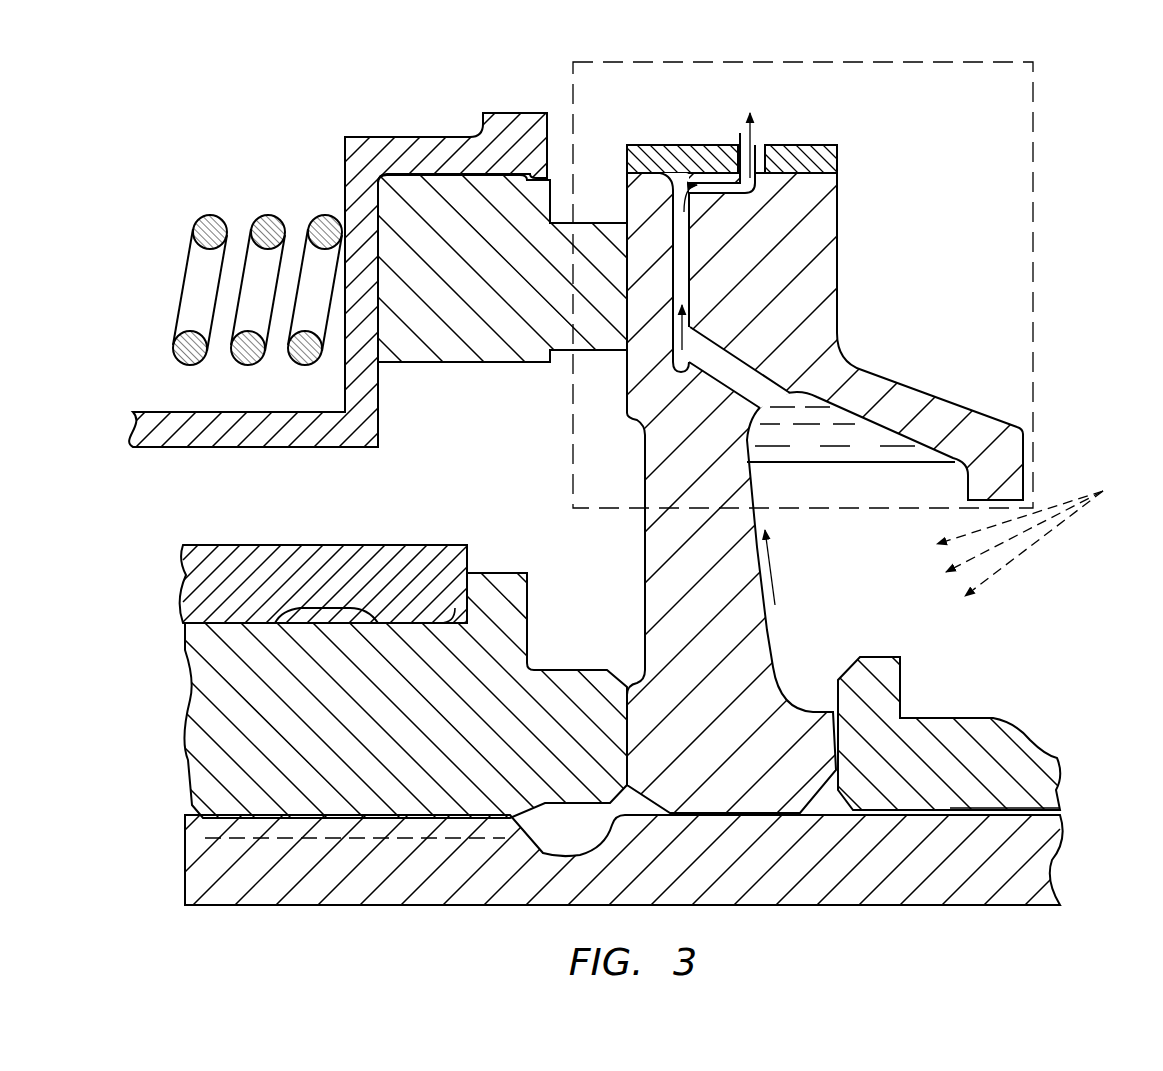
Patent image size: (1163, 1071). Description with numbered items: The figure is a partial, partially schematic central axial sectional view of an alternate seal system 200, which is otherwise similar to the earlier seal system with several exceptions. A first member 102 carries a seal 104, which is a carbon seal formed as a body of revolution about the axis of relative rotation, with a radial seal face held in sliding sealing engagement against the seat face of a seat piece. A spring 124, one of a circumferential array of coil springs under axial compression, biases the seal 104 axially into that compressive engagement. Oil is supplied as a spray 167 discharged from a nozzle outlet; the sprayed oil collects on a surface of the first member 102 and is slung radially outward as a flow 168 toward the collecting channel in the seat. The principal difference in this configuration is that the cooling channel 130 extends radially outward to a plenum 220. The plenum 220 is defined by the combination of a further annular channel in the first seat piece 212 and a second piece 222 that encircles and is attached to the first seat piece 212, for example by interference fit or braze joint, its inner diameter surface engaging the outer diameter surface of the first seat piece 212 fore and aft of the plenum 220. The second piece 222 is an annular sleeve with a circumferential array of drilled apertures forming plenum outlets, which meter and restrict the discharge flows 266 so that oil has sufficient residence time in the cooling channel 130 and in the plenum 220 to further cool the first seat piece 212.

The seal system 200 is at (378, 251).
The first member 102 is at (420, 147).
The seal 104 is at (487, 332).
The spring 124 is at (248, 205).
The cooling channel 130 is at (690, 262).
The first seat piece 212 is at (795, 312).
The plenum 220 is at (708, 176).
The second piece 222 is at (830, 155).
The discharge flows 266 is at (753, 135).
The flow 168 is at (770, 587).
The spray 167 is at (1043, 540).